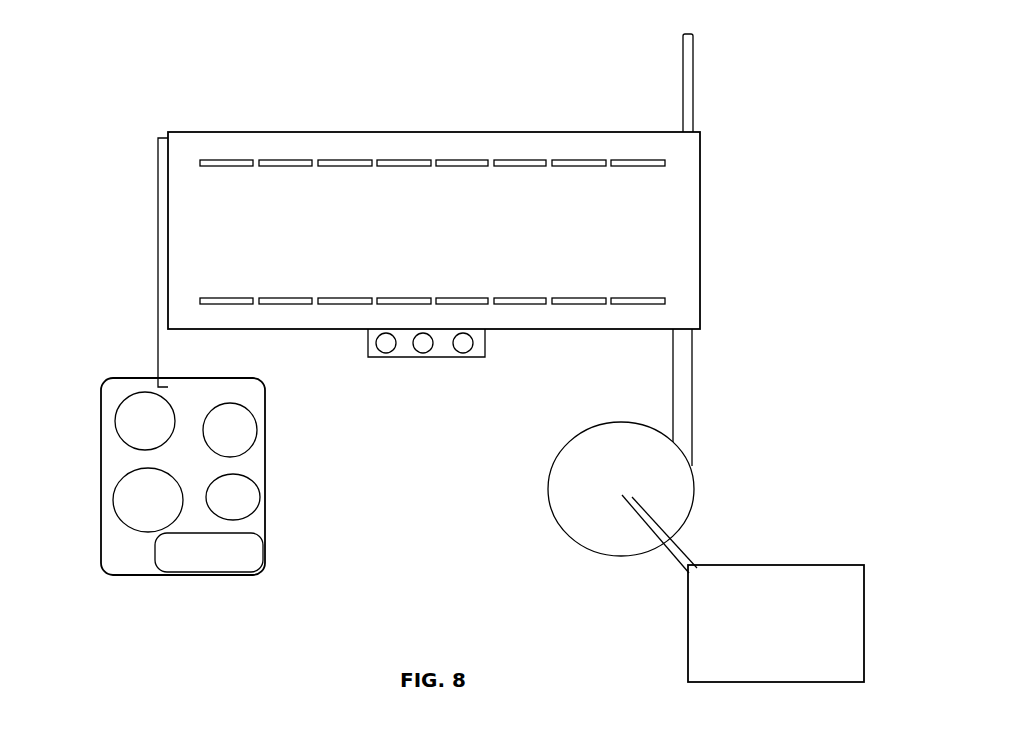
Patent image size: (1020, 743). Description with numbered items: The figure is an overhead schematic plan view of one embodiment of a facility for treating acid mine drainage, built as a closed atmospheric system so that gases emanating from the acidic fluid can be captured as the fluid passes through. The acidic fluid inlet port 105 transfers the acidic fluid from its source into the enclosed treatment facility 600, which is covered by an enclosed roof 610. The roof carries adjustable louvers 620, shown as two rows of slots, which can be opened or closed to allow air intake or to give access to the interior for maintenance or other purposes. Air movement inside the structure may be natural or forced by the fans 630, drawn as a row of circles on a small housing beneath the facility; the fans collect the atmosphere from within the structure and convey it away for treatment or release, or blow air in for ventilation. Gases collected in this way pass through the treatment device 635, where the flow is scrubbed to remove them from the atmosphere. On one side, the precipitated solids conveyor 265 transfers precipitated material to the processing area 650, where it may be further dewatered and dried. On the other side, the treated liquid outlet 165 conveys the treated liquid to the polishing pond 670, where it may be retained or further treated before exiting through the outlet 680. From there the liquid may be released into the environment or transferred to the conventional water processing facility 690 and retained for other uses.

The acidic fluid inlet port 105 is at (690, 132).
The treated liquid outlet 165 is at (687, 332).
The precipitated solids conveyor 265 is at (163, 177).
The enclosed treatment facility 600 is at (195, 132).
The enclosed roof 610 is at (592, 255).
The adjustable louvers 620 is at (640, 160).
The fans 630 is at (463, 352).
The treatment device 635 is at (485, 352).
The processing area 650 is at (185, 477).
The polishing pond 670 is at (657, 475).
The outlet 680 is at (680, 548).
The conventional water processing facility 690 is at (725, 640).